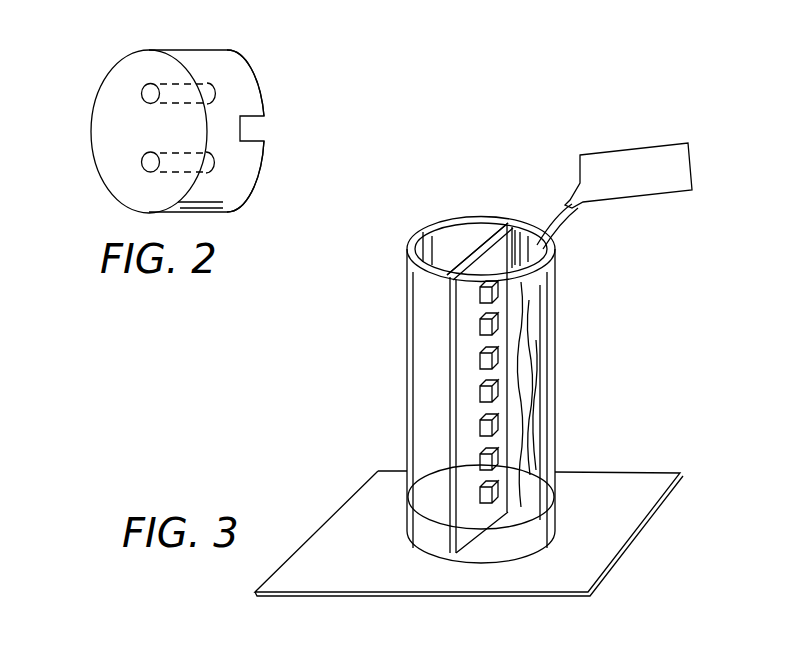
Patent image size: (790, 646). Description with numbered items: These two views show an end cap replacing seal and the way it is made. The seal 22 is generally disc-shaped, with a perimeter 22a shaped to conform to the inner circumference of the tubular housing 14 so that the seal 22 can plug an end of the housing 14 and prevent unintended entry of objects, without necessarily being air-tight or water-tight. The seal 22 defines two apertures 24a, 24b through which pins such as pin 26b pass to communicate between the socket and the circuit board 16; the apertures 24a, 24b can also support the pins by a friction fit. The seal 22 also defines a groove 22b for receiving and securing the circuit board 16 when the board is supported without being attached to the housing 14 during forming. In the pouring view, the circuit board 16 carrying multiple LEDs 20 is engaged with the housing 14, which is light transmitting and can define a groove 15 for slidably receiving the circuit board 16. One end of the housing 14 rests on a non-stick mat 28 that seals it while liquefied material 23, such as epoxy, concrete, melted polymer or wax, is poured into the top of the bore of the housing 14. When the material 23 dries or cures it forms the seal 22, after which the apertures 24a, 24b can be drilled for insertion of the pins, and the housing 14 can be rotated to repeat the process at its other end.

In FIG. 3, the tubular housing 14 is at (553, 388).
In FIG. 3, the groove 15 is at (458, 272).
In FIG. 3, the circuit board 16 is at (455, 402).
In FIG. 3, the LEDs 20 is at (478, 332).
In FIG. 2, the end cap replacing seal 22 is at (237, 45).
In FIG. 2, the perimeter 22a is at (250, 93).
In FIG. 2, the groove 22b is at (250, 140).
In FIG. 3, the liquefied material 23 is at (530, 352).
In FIG. 2, the aperture 24a is at (143, 170).
In FIG. 2, the aperture 24b is at (143, 95).
In FIG. 3, the pin 26b is at (171, 638).
In FIG. 3, the non-stick mat 28 is at (596, 489).